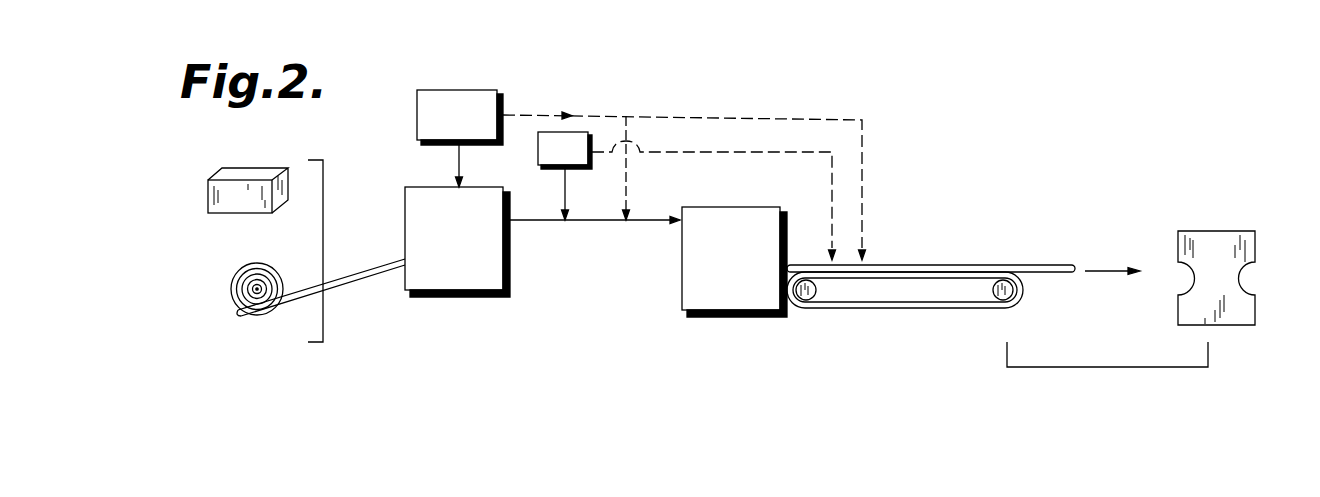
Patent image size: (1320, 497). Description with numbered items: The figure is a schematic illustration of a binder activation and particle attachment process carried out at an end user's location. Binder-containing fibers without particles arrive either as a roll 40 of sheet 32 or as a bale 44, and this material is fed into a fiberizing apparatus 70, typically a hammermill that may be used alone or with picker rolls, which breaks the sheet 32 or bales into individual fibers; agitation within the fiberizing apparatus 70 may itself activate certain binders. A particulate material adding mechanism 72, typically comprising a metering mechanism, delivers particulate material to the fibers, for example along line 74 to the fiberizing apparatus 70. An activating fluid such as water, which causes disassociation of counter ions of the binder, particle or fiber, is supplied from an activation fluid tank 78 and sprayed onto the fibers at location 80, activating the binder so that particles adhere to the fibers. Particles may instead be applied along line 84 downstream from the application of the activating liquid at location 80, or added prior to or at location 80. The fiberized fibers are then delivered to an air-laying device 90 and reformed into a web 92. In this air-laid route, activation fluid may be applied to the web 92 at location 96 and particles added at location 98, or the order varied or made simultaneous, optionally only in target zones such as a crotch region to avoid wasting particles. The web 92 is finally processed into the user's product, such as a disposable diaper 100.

The sheet 32 is at (381, 264).
The roll 40 is at (238, 303).
The bale 44 is at (241, 178).
The fiberizing apparatus 70 is at (462, 278).
The particulate material adding mechanism 72 is at (448, 88).
The line 74 is at (458, 163).
The activation fluid tank 78 is at (537, 152).
The location 80 is at (567, 193).
The line 84 is at (627, 183).
The air-laying device 90 is at (722, 300).
The web 92 is at (912, 265).
The location 96 is at (832, 198).
The location 98 is at (864, 175).
The disposable diaper 100 is at (1222, 232).